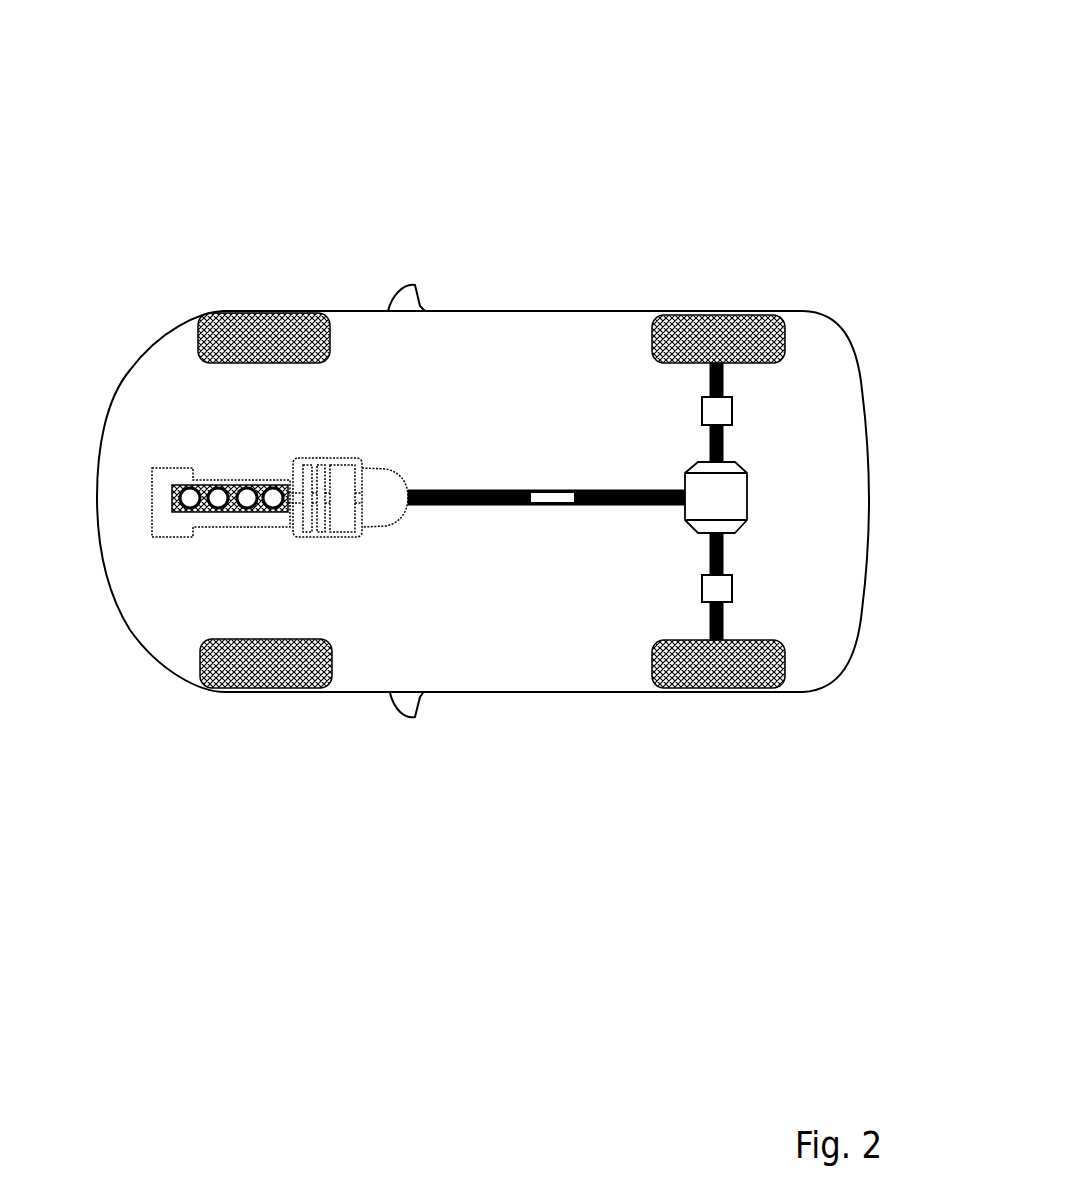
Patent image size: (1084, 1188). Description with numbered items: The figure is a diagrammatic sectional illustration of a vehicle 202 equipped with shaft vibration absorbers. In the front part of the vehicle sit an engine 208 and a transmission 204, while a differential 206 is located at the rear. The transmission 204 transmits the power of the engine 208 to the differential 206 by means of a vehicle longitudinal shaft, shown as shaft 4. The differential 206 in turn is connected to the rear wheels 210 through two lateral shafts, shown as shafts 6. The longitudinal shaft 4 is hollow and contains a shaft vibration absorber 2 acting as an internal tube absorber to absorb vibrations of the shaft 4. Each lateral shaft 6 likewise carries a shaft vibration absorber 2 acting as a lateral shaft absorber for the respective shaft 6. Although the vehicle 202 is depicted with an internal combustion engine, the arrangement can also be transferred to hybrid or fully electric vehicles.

The vehicle 202 is at (168, 327).
The engine 208 is at (242, 482).
The transmission 204 is at (347, 458).
The shaft 4 is at (480, 490).
The shaft vibration absorber 2 is at (552, 492).
The rear wheels 210 is at (718, 315).
The differential 206 is at (747, 497).
The shaft 6 is at (725, 381).